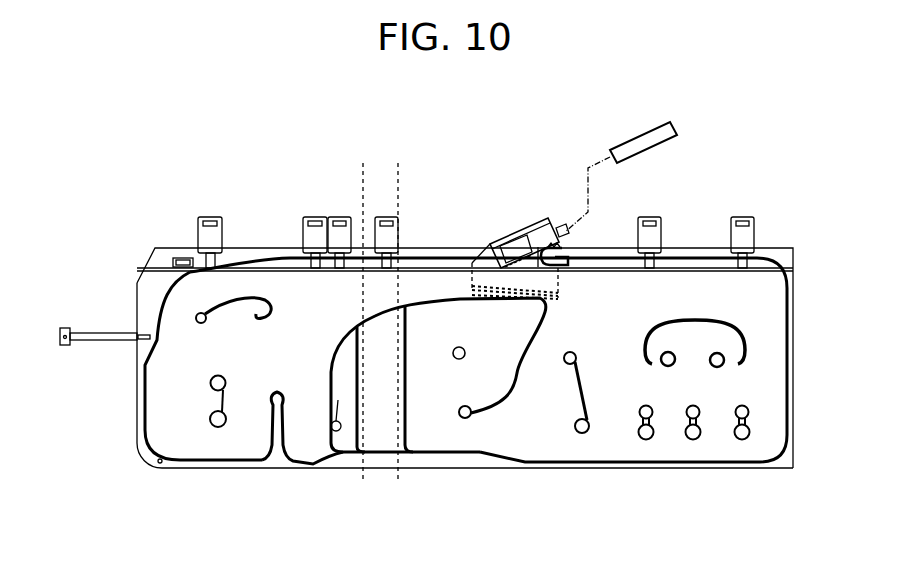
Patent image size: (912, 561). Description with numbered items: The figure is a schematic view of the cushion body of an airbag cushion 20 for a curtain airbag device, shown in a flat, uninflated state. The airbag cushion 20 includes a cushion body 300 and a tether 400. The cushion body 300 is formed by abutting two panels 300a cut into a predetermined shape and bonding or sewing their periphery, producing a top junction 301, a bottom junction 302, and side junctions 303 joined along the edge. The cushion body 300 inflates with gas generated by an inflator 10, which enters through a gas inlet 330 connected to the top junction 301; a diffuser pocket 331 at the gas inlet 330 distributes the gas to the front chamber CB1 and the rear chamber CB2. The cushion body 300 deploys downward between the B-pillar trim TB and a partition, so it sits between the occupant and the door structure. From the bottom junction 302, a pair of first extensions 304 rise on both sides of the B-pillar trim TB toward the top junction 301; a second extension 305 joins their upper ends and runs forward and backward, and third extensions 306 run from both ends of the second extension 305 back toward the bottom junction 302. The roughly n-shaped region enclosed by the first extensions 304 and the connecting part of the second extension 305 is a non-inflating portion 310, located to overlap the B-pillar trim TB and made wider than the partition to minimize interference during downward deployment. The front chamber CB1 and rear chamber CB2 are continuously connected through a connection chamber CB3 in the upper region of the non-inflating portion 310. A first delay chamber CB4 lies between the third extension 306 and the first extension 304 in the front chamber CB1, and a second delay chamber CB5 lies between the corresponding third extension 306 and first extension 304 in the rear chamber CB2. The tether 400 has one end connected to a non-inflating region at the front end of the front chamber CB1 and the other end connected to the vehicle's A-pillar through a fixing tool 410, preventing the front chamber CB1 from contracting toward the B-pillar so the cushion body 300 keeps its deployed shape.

The airbag cushion 20 is at (181, 143).
The inflator 10 is at (662, 141).
The B-pillar trim TB is at (390, 182).
The cushion body 300 is at (278, 232).
The panels 300a is at (777, 247).
The top junction 301 is at (698, 256).
The bottom junction 302 is at (198, 462).
The side junctions 303 is at (137, 374).
The first extensions 304 is at (353, 375).
The second extension 305 is at (472, 262).
The third extensions 306 is at (298, 462).
The non-inflating portion 310 is at (393, 443).
The gas inlet 330 is at (530, 218).
The diffuser pocket 331 is at (573, 252).
The tether 400 is at (107, 323).
The fixing tool 410 is at (63, 325).
The front chamber CB1 is at (227, 353).
The rear chamber CB2 is at (620, 383).
The connection chamber CB3 is at (410, 287).
The first delay chamber CB4 is at (317, 395).
The second delay chamber CB5 is at (533, 332).